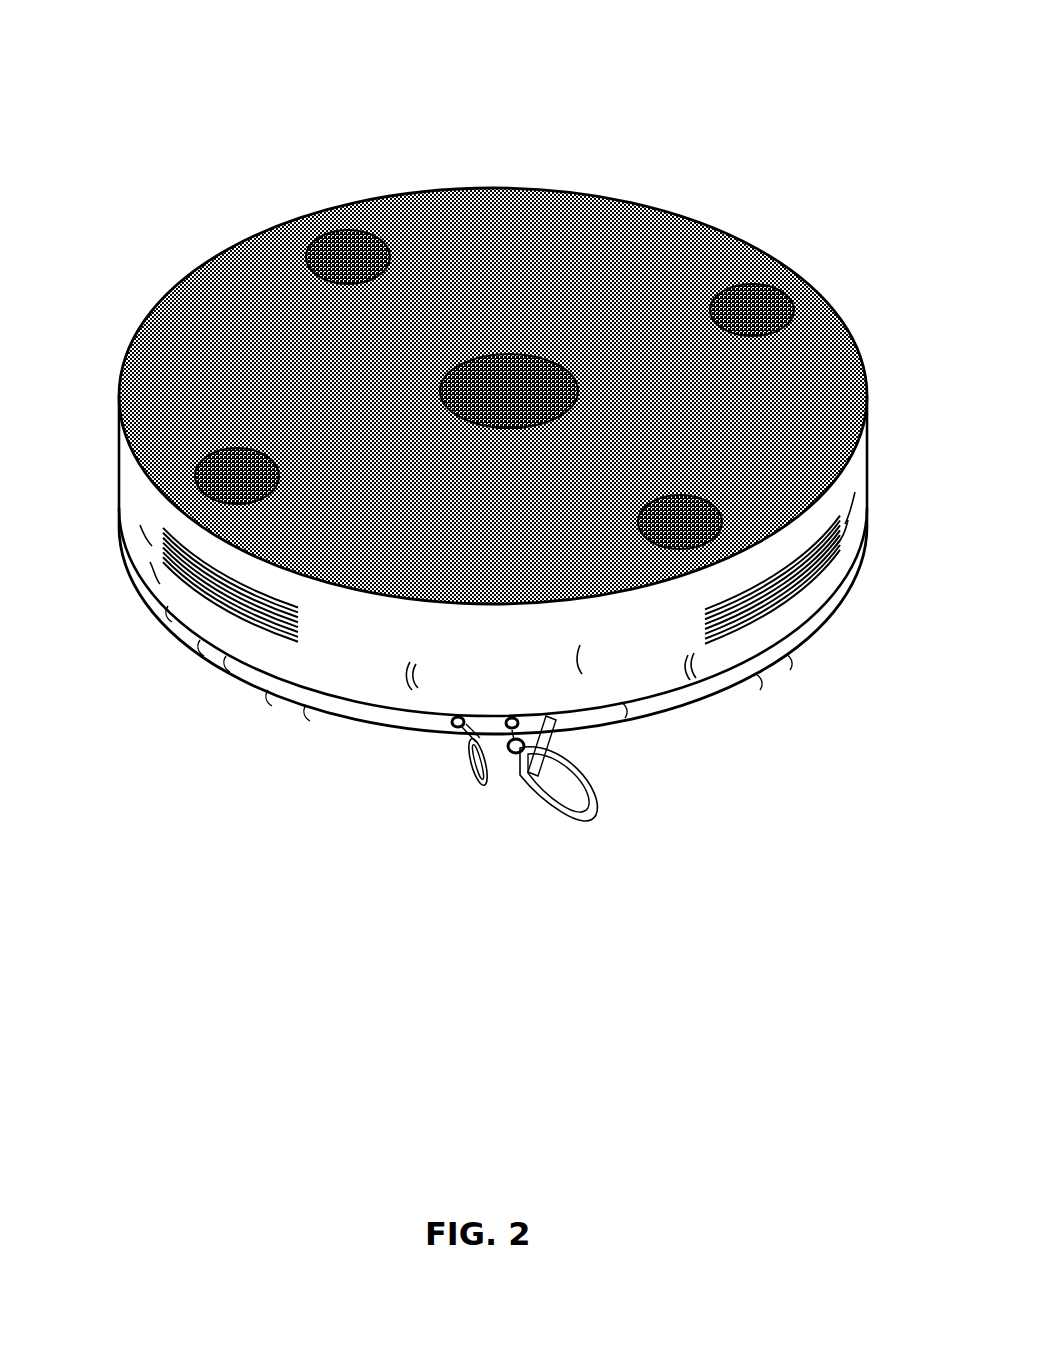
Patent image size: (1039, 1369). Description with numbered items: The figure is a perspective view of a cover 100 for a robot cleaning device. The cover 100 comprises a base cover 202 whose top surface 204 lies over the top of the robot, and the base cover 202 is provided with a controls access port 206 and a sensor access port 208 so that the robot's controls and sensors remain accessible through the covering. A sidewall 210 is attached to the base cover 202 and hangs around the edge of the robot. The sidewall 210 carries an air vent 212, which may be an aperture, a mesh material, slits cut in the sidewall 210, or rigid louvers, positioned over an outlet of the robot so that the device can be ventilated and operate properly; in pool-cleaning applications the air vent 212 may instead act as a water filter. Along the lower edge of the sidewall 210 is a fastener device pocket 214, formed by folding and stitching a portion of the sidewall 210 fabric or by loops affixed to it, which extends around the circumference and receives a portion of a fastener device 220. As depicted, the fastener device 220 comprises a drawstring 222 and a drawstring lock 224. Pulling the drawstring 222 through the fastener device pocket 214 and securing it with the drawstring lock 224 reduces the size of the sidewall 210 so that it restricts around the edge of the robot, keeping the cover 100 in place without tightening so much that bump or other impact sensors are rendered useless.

The cover 100 is at (168, 54).
The base cover 202 is at (482, 188).
The top surface 204 is at (620, 222).
The controls access port 206 is at (555, 362).
The sensor access port 208 is at (330, 232).
The sidewall 210 is at (116, 487).
The air vent 212 is at (172, 576).
The fastener device pocket 214 is at (356, 724).
The fastener device 220 is at (613, 889).
The drawstring 222 is at (596, 822).
The drawstring lock 224 is at (507, 782).